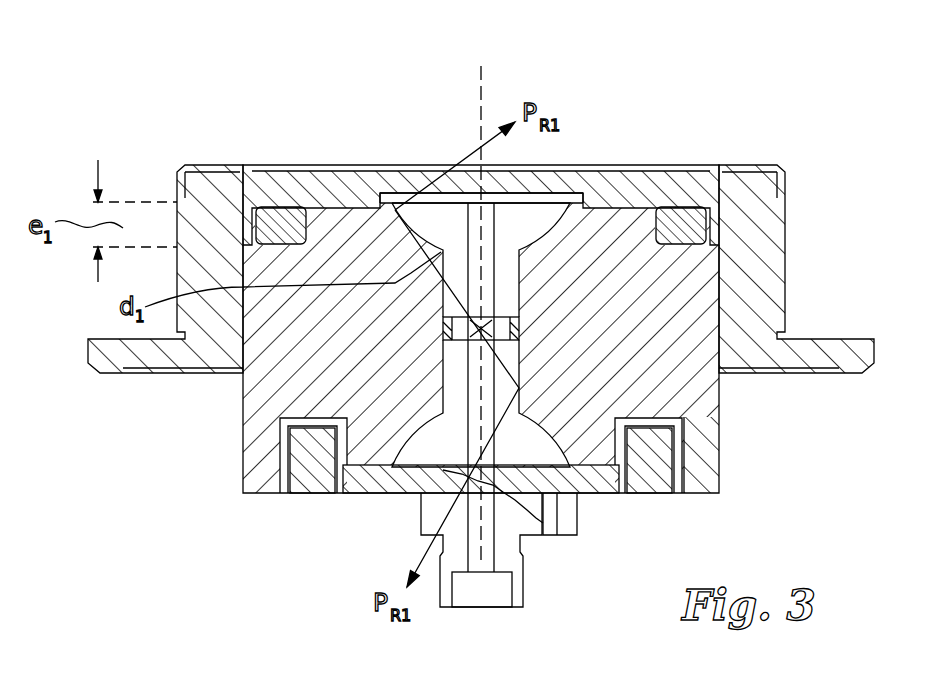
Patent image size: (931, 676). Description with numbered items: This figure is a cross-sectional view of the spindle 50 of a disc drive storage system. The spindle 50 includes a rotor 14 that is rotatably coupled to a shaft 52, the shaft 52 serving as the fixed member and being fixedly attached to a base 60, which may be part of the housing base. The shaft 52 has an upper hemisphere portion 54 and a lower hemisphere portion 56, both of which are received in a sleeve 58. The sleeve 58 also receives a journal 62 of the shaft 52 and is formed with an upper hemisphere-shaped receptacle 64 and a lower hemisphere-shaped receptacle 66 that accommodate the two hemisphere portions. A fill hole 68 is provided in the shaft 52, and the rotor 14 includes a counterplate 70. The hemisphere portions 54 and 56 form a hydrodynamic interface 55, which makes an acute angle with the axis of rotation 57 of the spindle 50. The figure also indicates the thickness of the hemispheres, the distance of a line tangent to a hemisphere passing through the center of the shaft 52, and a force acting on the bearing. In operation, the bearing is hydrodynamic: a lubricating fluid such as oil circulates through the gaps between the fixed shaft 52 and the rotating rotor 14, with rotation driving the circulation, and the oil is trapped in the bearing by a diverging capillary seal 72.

The rotor 14 is at (767, 248).
The spindle 50 is at (148, 137).
The shaft 52 is at (457, 367).
The upper hemisphere portion 54 is at (541, 198).
The hydrodynamic interface 55 is at (712, 247).
The lower hemisphere portion 56 is at (398, 478).
The axis of rotation 57 is at (481, 68).
The sleeve 58 is at (707, 397).
The base 60 is at (640, 495).
The journal 62 is at (507, 292).
The upper hemisphere-shaped receptacle 64 is at (412, 198).
The lower hemisphere-shaped receptacle 66 is at (576, 505).
The fill hole 68 is at (500, 607).
The counterplate 70 is at (614, 184).
The diverging capillary seal 72 is at (327, 497).